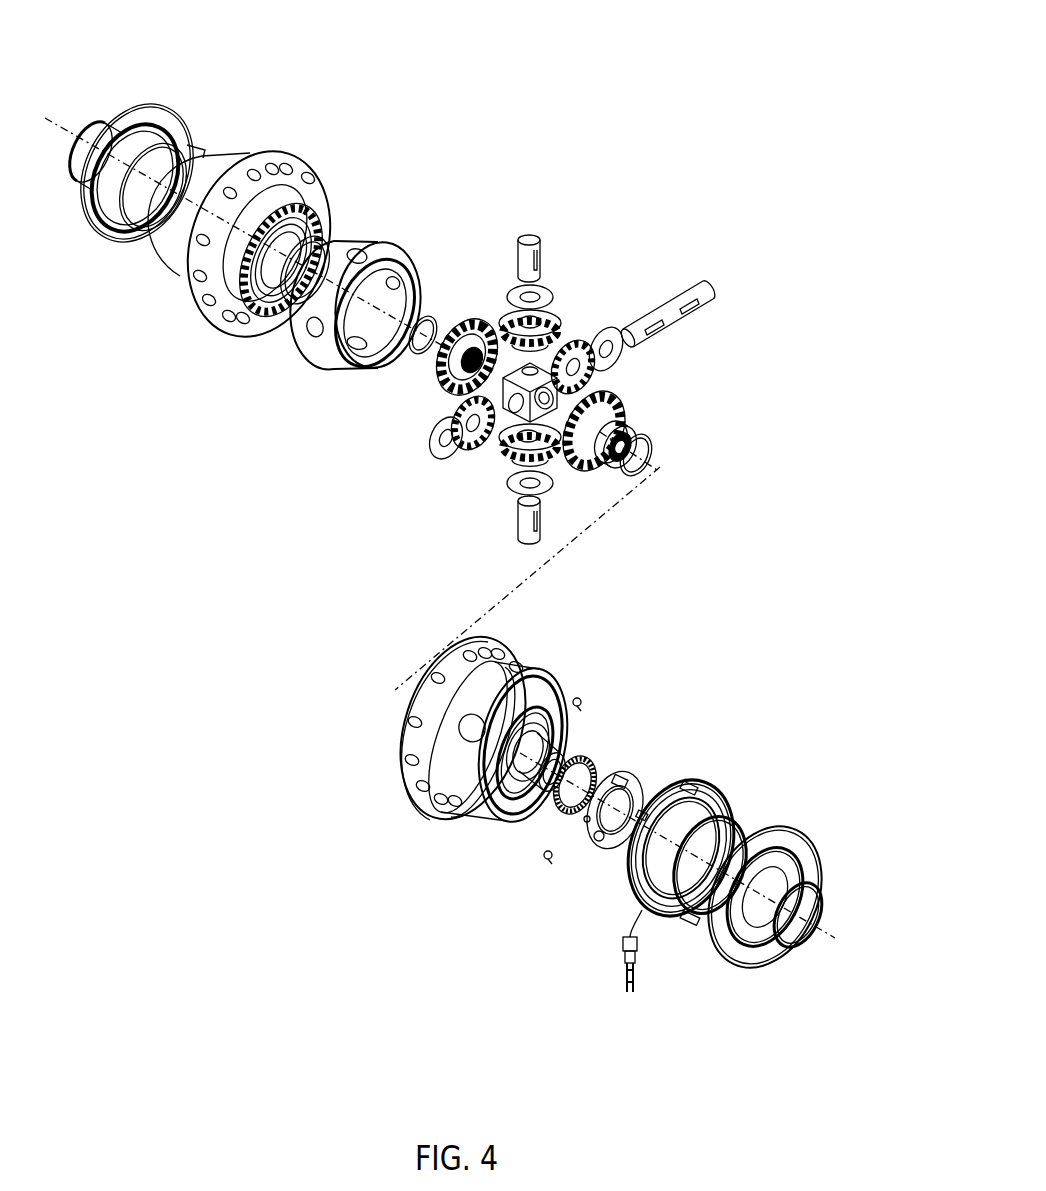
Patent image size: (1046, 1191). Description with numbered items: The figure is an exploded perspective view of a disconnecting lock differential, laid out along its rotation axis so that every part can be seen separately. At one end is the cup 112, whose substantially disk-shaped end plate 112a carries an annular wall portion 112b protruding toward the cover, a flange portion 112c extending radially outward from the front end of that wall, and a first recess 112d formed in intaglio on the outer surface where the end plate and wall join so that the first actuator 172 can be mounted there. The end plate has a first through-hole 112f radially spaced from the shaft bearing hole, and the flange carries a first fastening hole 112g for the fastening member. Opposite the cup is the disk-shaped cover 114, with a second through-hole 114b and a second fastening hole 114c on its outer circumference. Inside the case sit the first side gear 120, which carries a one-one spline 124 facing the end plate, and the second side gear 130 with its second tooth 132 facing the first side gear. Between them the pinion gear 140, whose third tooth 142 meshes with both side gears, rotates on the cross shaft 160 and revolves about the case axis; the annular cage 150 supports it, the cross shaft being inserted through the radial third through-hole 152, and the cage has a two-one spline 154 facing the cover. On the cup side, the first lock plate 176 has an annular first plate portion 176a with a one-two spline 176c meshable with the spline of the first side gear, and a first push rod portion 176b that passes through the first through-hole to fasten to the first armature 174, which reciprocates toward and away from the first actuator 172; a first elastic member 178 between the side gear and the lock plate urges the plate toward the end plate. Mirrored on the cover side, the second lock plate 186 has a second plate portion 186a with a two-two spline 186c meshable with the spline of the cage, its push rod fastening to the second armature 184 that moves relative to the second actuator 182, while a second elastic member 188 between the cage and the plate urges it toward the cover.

The cup 112 is at (553, 686).
The end plate 112a is at (550, 727).
The annular wall portion 112b is at (417, 803).
The flange portion 112c is at (400, 750).
The first recess 112d is at (480, 812).
The first through-hole 112f is at (503, 800).
The first fastening hole 112g is at (407, 717).
The cover 114 is at (305, 150).
The second through-hole 114b is at (200, 265).
The second fastening hole 114c is at (172, 238).
The first side gear 120 is at (643, 409).
The 1-1 spline 124 is at (622, 408).
The second side gear 130 is at (470, 318).
The second tooth 132 is at (437, 368).
The pinion gear 140 is at (580, 335).
The third tooth 142 is at (503, 452).
The cage 150 is at (355, 276).
The third through-hole 152 is at (313, 338).
The 2-1 spline 154 is at (293, 323).
The cross shaft 160 is at (715, 290).
The first actuator 172 is at (725, 790).
The first armature 174 is at (810, 842).
The first lock plate 176 is at (640, 785).
The first plate portion 176a is at (587, 842).
The first push rod portion 176b is at (603, 850).
The 1-2 spline 176c is at (583, 825).
The first elastic member 178 is at (588, 770).
The second actuator 182 is at (253, 147).
The second armature 184 is at (182, 107).
The second lock plate 186 is at (310, 215).
The second plate portion 186a is at (237, 272).
The 2-2 spline 186c is at (272, 280).
The second elastic member 188 is at (330, 232).